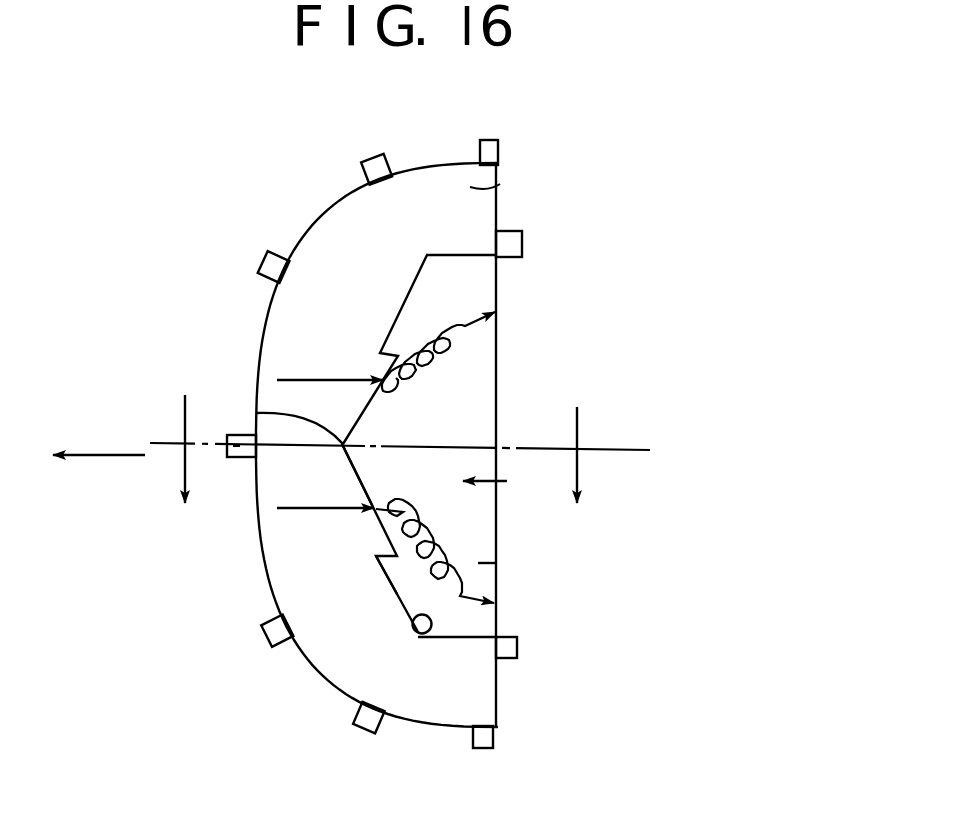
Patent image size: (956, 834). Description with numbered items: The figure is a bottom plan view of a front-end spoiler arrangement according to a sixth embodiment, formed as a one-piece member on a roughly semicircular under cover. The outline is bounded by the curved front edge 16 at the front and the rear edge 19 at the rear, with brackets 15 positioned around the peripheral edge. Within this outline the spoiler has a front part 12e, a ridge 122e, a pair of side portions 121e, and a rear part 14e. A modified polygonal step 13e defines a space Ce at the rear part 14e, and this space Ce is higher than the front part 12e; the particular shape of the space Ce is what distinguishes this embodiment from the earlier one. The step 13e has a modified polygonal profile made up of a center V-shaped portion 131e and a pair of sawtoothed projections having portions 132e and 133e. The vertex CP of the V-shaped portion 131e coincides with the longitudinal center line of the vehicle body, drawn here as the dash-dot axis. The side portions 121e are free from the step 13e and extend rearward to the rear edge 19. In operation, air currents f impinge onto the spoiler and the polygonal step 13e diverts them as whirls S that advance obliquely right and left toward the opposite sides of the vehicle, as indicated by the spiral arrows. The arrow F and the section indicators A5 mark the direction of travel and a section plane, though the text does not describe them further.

The curved front edge 16 is at (323, 216).
The rear edge 19 is at (498, 692).
The front part 12e is at (275, 302).
The ridge 122e is at (390, 356).
The side portions 121e is at (500, 184).
The step 13e is at (378, 486).
The center V-shaped portion 131e is at (362, 475).
The sawtoothed projection portion 133e is at (380, 557).
The sawtoothed projection portion 132e is at (428, 636).
The air currents f is at (314, 380).
The whirls S is at (441, 343).
The vertex CP is at (256, 413).
The force direction F is at (105, 457).
The section line A5 is at (376, 477).
The space Ce is at (501, 490).
The rear part 14e is at (496, 563).
The brackets 15 is at (518, 646).